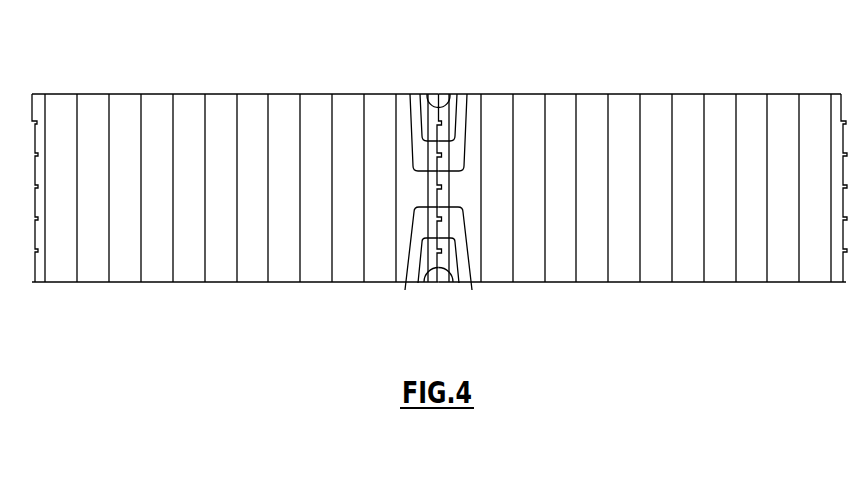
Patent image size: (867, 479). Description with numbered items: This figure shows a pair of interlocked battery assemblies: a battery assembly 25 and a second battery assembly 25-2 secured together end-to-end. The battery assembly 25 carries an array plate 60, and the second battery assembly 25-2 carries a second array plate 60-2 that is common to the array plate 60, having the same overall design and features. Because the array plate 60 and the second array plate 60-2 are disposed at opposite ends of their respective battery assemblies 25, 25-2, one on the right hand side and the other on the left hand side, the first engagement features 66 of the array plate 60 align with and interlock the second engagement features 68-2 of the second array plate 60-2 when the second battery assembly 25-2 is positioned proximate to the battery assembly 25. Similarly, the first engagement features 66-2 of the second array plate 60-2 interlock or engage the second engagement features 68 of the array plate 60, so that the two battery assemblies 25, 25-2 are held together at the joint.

The battery assembly 25 is at (222, 100).
The second battery assembly 25-2 is at (657, 112).
The array plate 60 is at (427, 94).
The second array plate 60-2 is at (449, 94).
The first engagement features 66 is at (411, 94).
The second engagement features 68 is at (419, 94).
The first engagement features of second array plate 66-2 is at (457, 94).
The second engagement features of second array plate 68-2 is at (466, 94).